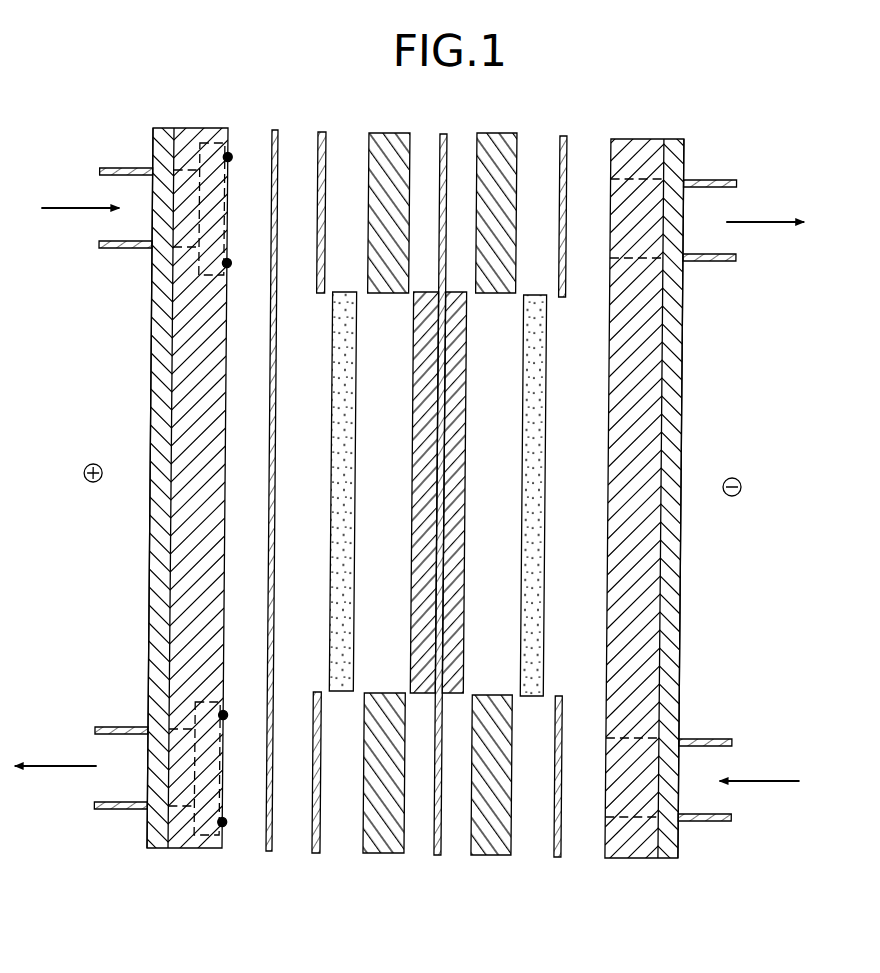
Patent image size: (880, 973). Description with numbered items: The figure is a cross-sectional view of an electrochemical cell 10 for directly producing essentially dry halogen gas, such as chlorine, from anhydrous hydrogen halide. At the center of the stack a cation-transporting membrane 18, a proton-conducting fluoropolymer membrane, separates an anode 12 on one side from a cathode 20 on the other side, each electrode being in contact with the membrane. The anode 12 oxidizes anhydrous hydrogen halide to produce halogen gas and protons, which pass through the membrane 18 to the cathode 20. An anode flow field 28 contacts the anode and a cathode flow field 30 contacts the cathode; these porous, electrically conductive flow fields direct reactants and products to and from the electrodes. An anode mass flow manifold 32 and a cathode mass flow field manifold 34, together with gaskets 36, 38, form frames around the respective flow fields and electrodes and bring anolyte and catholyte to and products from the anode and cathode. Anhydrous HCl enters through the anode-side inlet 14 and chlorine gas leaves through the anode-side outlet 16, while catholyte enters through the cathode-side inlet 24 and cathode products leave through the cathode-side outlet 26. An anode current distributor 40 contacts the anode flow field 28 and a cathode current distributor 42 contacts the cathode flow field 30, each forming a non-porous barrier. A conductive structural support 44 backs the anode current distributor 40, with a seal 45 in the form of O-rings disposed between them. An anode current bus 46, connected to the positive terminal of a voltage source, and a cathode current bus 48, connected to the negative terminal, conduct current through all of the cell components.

The electrochemical cell 10 is at (153, 52).
The anode 12 is at (428, 402).
The anode-side inlet 14 is at (127, 168).
The anode-side outlet 16 is at (128, 727).
The cation-transporting membrane 18 is at (443, 858).
The cathode 20 is at (460, 402).
The cathode-side inlet 24 is at (716, 739).
The cathode-side outlet 26 is at (707, 180).
The anode flow field 28 is at (340, 583).
The cathode flow field 30 is at (538, 585).
The anode mass flow manifold 32 is at (395, 133).
The cathode mass flow field manifold 34 is at (497, 133).
The gasket 36 is at (322, 132).
The gasket 38 is at (565, 136).
The anode current distributor 40 is at (274, 851).
The cathode current distributor 42 is at (652, 858).
The conductive structural support 44 is at (193, 848).
The seal 45 is at (232, 154).
The anode current bus 46 is at (161, 848).
The cathode current bus 48 is at (673, 858).